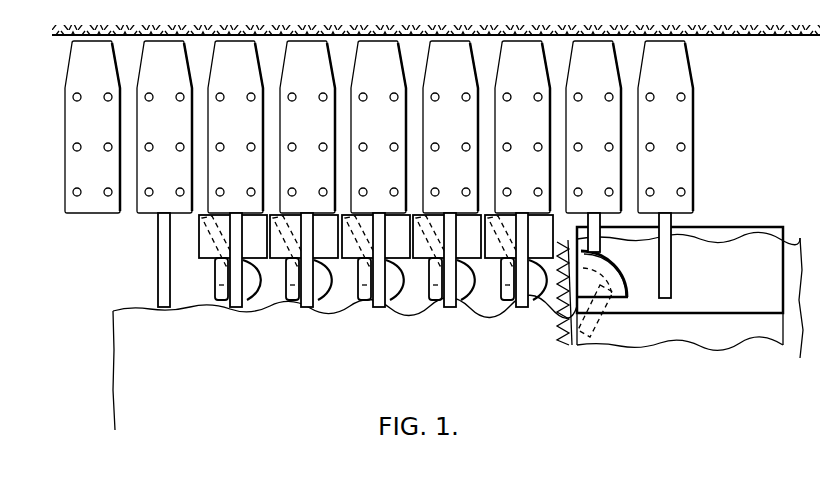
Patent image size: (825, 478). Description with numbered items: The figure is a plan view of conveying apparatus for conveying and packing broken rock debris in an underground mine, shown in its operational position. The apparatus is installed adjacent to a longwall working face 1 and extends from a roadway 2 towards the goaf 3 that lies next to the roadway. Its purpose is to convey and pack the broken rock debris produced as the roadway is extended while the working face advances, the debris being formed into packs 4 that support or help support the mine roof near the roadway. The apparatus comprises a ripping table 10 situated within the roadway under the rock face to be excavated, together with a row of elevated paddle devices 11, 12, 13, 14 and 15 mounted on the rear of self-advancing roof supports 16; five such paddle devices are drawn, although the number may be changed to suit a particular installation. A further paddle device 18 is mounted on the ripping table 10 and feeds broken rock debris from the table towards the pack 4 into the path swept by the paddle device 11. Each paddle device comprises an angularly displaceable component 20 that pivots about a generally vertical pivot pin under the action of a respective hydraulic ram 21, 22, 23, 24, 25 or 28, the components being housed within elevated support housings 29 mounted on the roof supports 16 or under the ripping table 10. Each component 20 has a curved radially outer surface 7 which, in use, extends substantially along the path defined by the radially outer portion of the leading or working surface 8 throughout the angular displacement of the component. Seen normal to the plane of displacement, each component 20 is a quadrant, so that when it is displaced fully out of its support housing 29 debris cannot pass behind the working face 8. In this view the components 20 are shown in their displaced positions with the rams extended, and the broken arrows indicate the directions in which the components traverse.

The longwall working face 1 is at (349, 69).
The roadway 2 is at (704, 348).
The goaf 3 is at (103, 380).
The pack 4 is at (179, 380).
The curved radially outer surface 7 is at (255, 276).
The leading or working surface 8 is at (218, 283).
The ripping table 10 is at (737, 246).
The paddle device 11 is at (540, 224).
The paddle device 12 is at (468, 224).
The paddle device 13 is at (397, 224).
The paddle device 14 is at (325, 224).
The paddle device 15 is at (254, 224).
The self-advancing roof support 16 is at (248, 136).
The further paddle device 18 is at (625, 270).
The angularly displaceable component 20 is at (247, 290).
The hydraulic ram 21 is at (521, 241).
The hydraulic ram 22 is at (449, 241).
The hydraulic ram 23 is at (378, 241).
The hydraulic ram 24 is at (306, 241).
The hydraulic ram 25 is at (235, 241).
The hydraulic ram 28 is at (607, 292).
The elevated support housing 29 is at (203, 258).